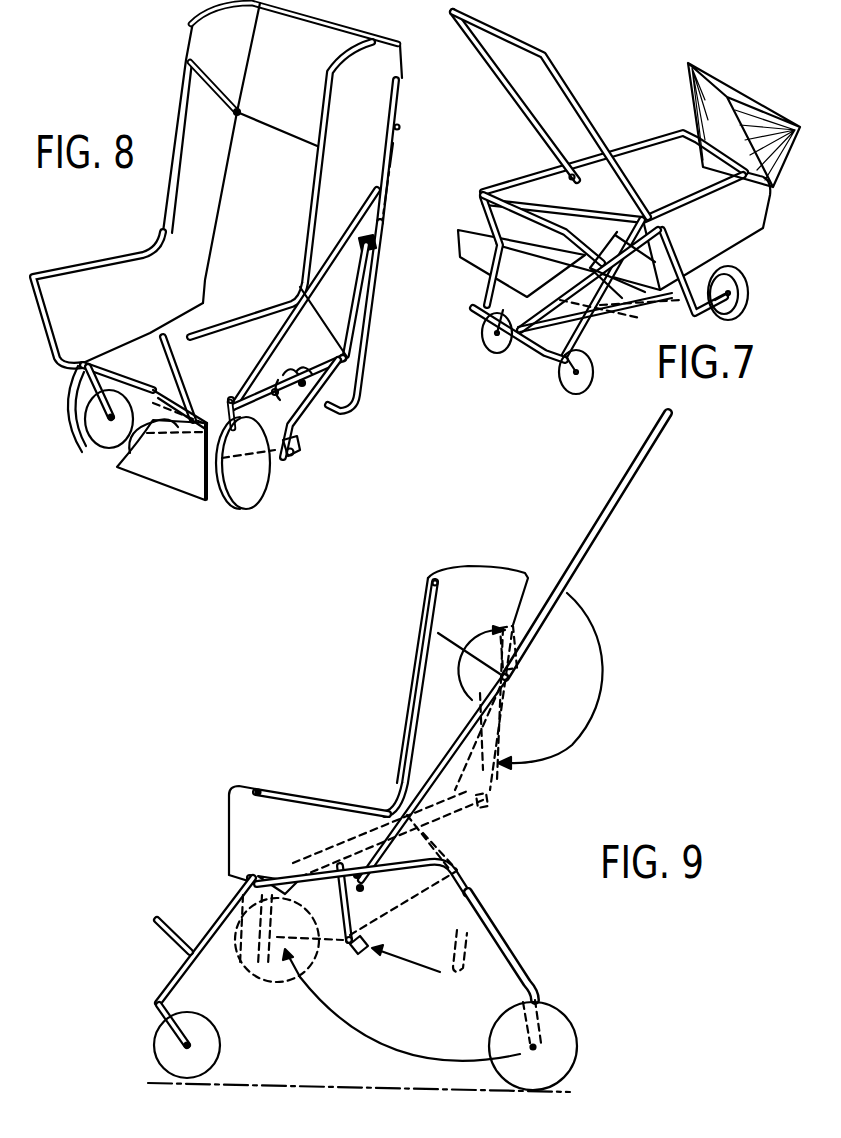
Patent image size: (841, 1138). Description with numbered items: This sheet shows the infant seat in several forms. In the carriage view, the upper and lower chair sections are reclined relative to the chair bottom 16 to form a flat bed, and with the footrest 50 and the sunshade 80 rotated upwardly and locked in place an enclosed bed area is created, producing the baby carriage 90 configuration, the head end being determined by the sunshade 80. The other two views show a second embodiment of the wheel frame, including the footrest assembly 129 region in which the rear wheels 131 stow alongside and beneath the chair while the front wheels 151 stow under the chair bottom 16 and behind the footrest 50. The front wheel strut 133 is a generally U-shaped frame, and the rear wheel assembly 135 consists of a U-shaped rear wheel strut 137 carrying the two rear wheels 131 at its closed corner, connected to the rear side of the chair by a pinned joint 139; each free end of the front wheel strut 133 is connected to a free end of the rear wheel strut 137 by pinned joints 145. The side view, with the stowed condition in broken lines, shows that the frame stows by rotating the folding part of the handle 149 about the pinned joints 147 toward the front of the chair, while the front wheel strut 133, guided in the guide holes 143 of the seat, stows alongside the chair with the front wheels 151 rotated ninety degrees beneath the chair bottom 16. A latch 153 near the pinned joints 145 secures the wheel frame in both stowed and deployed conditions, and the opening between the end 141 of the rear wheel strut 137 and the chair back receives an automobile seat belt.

In FIG. 8, the chair bottom 16 is at (150, 367).
In FIG. 8, the footrest 50 is at (187, 488).
In FIG. 9, the footrest 50 is at (156, 920).
In FIG. 7, the sunshade 80 is at (720, 76).
In FIG. 7, the baby carriage 90 is at (630, 88).
In FIG. 8, the footrest assembly 129 is at (141, 485).
In FIG. 8, the rear wheel 131 is at (73, 453).
In FIG. 9, the rear wheel 131 is at (267, 977).
In FIG. 8, the front wheel strut 133 is at (266, 356).
In FIG. 9, the front wheel strut 133 is at (185, 977).
In FIG. 9, the rear wheel assembly 135 is at (544, 966).
In FIG. 8, the rear wheel strut 137 is at (301, 425).
In FIG. 9, the rear wheel strut 137 is at (395, 918).
In FIG. 8, the pinned joint 139 is at (347, 358).
In FIG. 9, the pinned joint 139 is at (471, 895).
In FIG. 8, the end of rear wheel strut 141 is at (364, 280).
In FIG. 9, the end of rear wheel strut 141 is at (488, 820).
In FIG. 8, the guide holes 143 is at (232, 397).
In FIG. 9, the guide holes 143 is at (281, 856).
In FIG. 8, the pinned joints 145 is at (372, 244).
In FIG. 9, the pinned joints 145 is at (490, 798).
In FIG. 8, the pinned joints 147 is at (393, 127).
In FIG. 9, the pinned joints 147 is at (510, 677).
In FIG. 8, the handle 149 is at (360, 391).
In FIG. 9, the handle 149 is at (630, 481).
In FIG. 8, the front wheels 151 is at (117, 443).
In FIG. 9, the front wheels 151 is at (220, 1049).
In FIG. 8, the latch 153 is at (292, 456).
In FIG. 9, the latch 153 is at (325, 960).